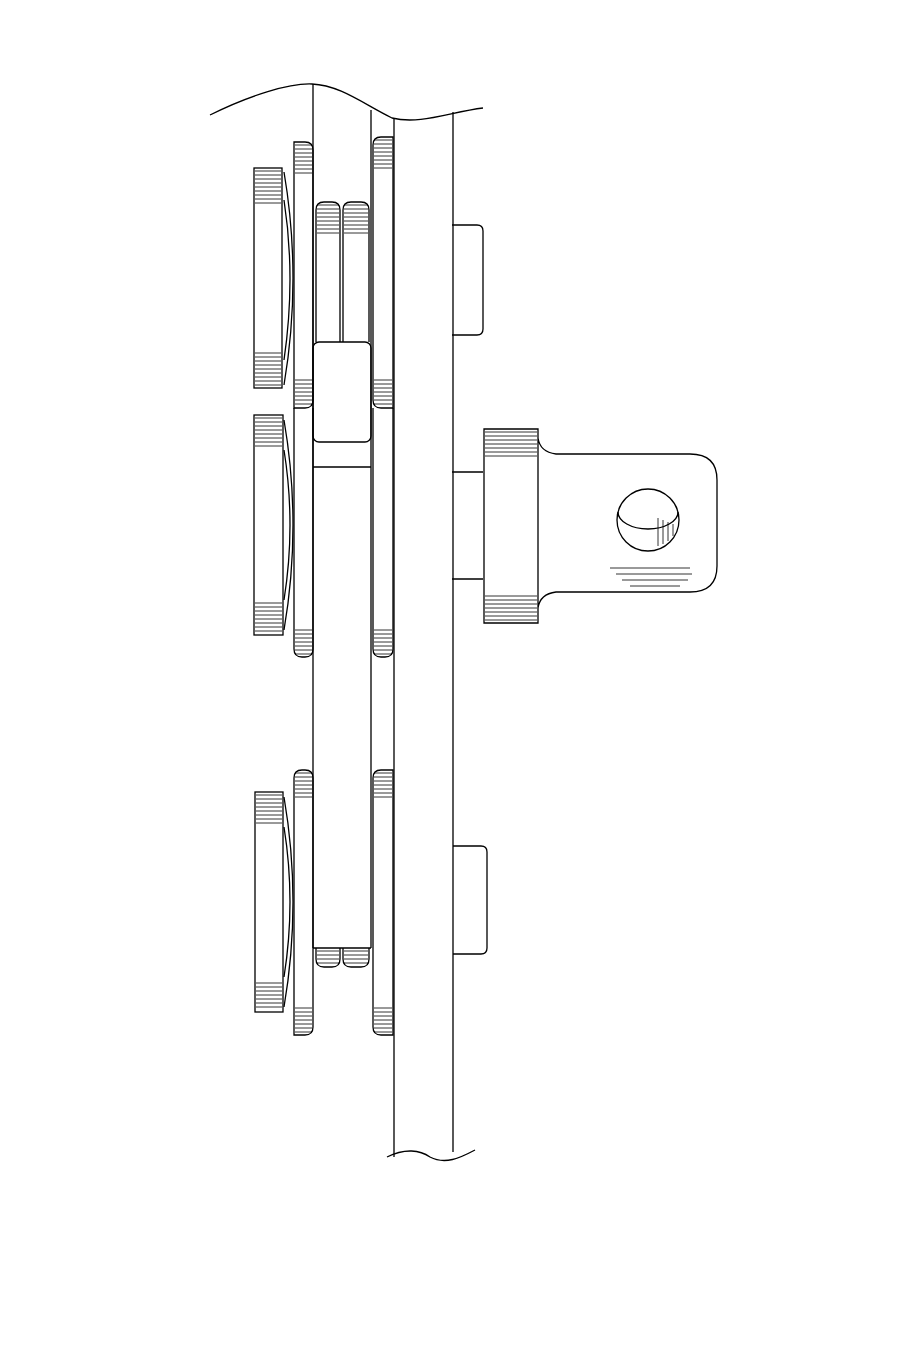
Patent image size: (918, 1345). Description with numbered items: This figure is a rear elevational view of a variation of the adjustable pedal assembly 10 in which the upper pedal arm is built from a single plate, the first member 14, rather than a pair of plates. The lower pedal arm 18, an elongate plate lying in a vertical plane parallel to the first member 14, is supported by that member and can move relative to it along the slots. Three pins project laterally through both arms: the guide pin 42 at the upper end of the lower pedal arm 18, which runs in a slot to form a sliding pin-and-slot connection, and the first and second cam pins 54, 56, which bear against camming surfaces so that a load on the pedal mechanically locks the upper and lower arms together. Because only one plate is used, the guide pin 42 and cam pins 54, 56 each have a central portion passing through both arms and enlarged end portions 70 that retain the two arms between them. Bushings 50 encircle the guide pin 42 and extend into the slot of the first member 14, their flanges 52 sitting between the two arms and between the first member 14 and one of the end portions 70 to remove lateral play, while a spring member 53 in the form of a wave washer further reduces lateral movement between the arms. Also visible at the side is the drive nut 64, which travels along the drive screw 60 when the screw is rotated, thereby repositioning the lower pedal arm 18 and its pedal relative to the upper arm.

The adjustable pedal assembly 10 is at (114, 78).
The first member 14 is at (313, 747).
The lower pedal arm 18 is at (312, 715).
The guide pin 42 is at (252, 540).
The bushings 50 is at (287, 1135).
The flanges 52 is at (300, 140).
The spring member 53 is at (258, 352).
The first cam pin 54 is at (252, 298).
The second cam pin 56 is at (252, 908).
The drive screw 60 is at (657, 552).
The drive nut 64 is at (717, 525).
The end portions 70 is at (258, 170).